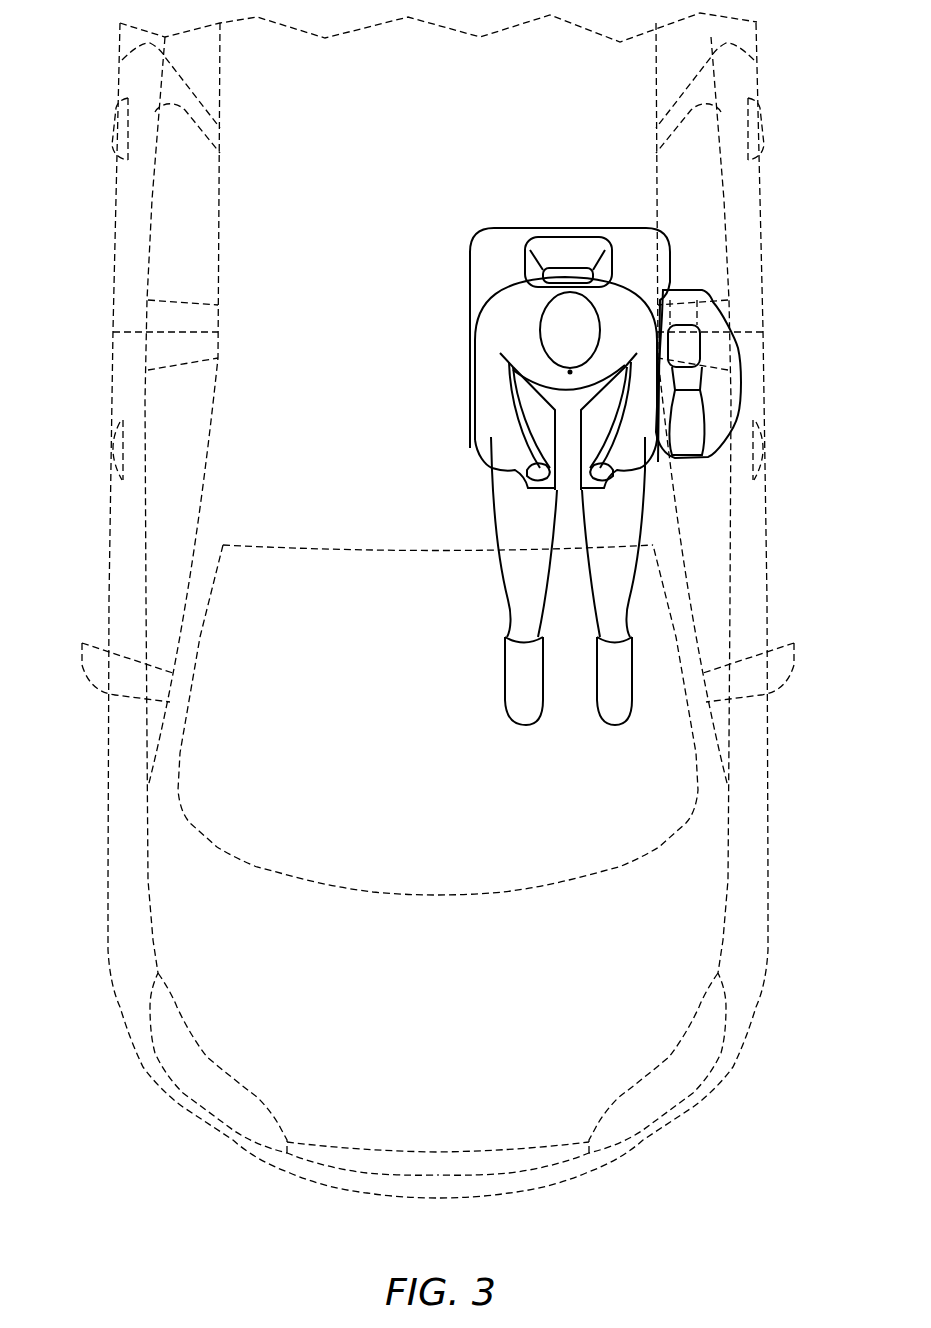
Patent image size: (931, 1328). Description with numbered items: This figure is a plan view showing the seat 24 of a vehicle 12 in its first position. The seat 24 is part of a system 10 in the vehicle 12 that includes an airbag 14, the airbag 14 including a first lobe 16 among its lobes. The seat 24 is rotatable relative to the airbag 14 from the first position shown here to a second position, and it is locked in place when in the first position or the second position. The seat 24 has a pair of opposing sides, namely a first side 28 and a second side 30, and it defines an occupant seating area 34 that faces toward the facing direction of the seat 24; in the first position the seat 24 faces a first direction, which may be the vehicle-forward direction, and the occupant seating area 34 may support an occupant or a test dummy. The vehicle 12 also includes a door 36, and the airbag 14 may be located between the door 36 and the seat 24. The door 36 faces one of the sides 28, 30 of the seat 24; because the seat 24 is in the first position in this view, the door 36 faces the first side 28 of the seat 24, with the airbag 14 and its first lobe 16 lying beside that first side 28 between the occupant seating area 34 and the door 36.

The system 10 is at (416, 192).
The vehicle 12 is at (66, 110).
The airbag 14 is at (710, 274).
The first lobe 16 is at (690, 342).
The seat 24 is at (532, 228).
The first side 28 is at (669, 256).
The second side 30 is at (469, 283).
The occupant seating area 34 is at (568, 539).
The door 36 is at (766, 368).